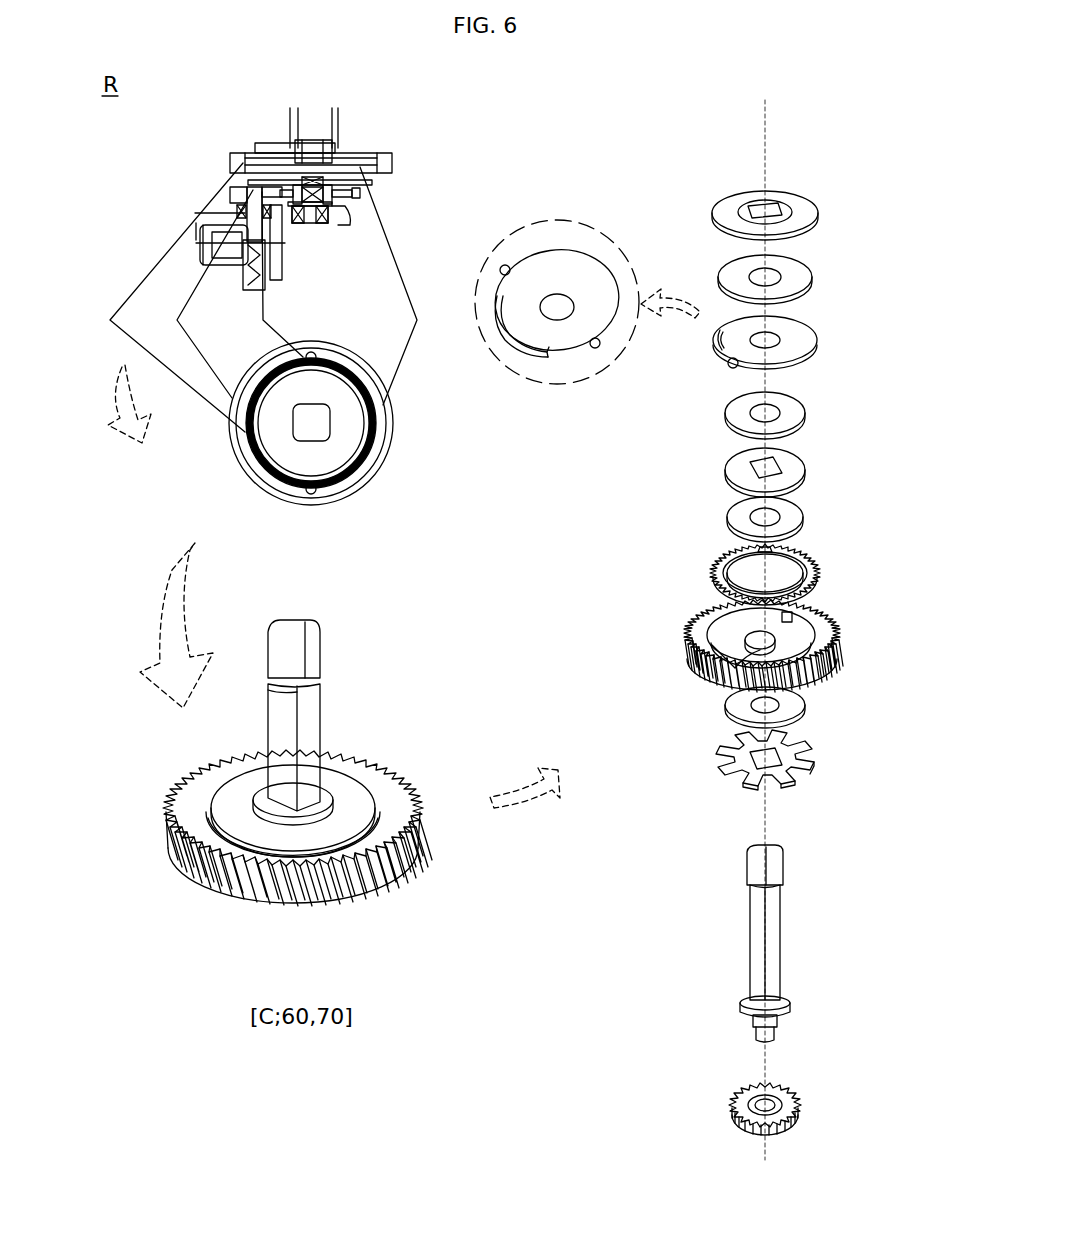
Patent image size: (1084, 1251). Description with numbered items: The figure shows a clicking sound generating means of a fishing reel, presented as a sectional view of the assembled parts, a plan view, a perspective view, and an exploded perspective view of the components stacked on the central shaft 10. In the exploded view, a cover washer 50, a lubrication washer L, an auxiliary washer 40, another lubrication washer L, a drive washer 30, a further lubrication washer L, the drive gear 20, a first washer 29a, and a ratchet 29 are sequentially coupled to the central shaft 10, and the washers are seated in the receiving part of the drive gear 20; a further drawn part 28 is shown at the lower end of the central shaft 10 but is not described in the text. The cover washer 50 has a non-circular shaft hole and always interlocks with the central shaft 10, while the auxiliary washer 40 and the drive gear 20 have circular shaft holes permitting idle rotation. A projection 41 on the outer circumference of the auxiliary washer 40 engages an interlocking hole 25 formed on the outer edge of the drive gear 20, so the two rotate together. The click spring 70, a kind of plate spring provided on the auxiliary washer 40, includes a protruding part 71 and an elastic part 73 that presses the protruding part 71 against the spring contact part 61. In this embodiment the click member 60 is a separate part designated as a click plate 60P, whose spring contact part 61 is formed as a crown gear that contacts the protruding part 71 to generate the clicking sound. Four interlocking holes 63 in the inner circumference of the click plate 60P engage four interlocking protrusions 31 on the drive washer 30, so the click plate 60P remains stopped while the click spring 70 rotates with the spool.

The central shaft 10 is at (330, 114).
The drive gear 20 is at (393, 160).
The interlocking hole 25 is at (723, 640).
The pinion gear 28 is at (355, 195).
The ratchet 29 is at (373, 180).
The first washer 29a is at (726, 707).
The drive washer 30 is at (806, 454).
The interlocking protrusion 31 is at (730, 461).
The auxiliary washer 40 is at (810, 322).
The projection 41 is at (311, 357).
The cover washer 50 is at (346, 386).
The click member 60 is at (506, 704).
The click plate 60P is at (710, 578).
The spring contact part 61 is at (812, 586).
The interlocking hole 63 is at (742, 552).
The click spring 70 is at (558, 482).
The protruding part 71 is at (556, 348).
The elastic part 73 is at (503, 310).
The lubrication washer L is at (800, 270).